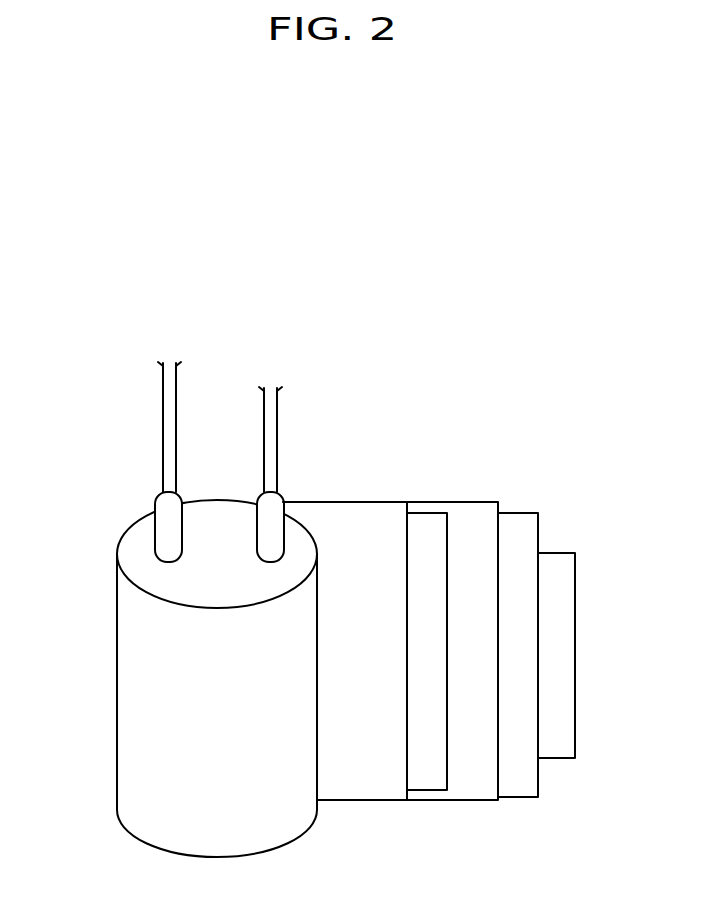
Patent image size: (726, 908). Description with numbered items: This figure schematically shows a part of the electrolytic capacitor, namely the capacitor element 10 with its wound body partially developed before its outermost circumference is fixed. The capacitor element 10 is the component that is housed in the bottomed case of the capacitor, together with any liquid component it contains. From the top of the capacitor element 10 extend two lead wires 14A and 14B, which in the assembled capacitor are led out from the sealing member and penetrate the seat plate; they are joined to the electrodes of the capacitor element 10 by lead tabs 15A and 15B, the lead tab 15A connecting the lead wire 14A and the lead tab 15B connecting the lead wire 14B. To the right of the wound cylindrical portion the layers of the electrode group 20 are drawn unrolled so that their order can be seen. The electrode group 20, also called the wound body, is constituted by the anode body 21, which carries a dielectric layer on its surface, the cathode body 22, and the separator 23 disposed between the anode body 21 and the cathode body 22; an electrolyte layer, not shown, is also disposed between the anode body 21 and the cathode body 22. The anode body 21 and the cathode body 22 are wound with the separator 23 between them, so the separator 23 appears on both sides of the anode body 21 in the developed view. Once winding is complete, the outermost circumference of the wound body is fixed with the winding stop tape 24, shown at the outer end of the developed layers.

The capacitor element 10 is at (404, 369).
The lead wire 14A is at (164, 402).
The lead wire 14B is at (279, 395).
The lead tab 15A is at (155, 500).
The lead tab 15B is at (285, 500).
The electrode group 20 is at (353, 848).
The anode body 21 is at (435, 770).
The cathode body 22 is at (518, 786).
The separator 23 is at (372, 772).
The winding stop tape 24 is at (555, 745).